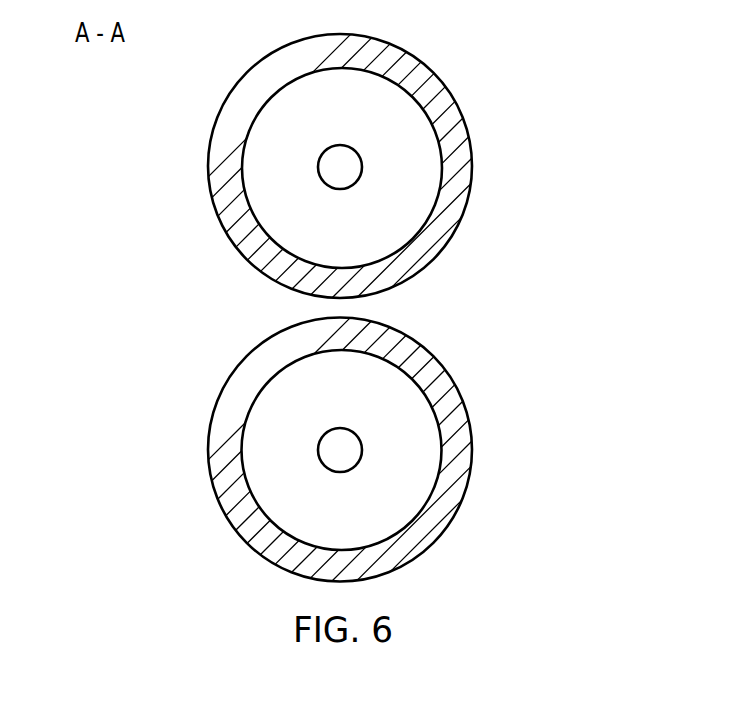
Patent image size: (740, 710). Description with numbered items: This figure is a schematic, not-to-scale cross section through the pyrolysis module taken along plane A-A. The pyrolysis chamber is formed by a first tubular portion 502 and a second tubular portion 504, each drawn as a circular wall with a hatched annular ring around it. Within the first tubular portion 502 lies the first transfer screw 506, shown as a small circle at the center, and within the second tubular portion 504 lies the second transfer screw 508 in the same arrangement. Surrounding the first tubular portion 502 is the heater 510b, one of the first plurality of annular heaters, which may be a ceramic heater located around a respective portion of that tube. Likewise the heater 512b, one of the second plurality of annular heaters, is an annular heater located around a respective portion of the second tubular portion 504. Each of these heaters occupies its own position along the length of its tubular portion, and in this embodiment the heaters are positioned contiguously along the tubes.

The first tubular portion 502 is at (361, 166).
The second tubular portion 504 is at (362, 450).
The first transfer screw 506 is at (328, 163).
The second transfer screw 508 is at (328, 446).
The heater 510b is at (221, 178).
The heater 512b is at (221, 462).